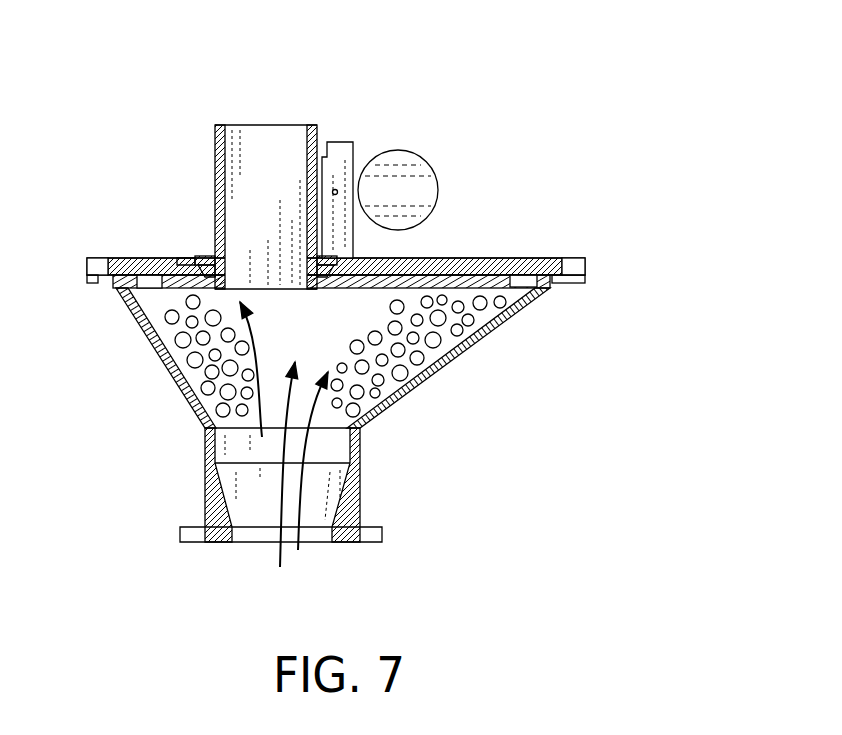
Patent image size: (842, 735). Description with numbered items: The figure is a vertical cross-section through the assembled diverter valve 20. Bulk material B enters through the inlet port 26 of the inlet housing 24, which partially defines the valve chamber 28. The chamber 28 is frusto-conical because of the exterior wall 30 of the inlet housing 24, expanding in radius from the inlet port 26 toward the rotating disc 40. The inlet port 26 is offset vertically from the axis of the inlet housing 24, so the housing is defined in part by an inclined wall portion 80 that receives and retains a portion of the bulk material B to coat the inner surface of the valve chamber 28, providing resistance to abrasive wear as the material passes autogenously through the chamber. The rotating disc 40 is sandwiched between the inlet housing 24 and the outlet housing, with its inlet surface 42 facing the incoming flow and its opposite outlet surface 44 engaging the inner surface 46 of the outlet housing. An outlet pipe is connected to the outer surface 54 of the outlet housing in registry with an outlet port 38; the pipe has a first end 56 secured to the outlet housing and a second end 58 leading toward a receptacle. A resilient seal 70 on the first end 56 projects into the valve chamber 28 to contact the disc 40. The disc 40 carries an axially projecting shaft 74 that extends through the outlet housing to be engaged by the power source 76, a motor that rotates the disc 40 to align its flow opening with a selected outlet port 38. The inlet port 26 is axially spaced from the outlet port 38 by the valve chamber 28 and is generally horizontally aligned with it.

The diverter valve 20 is at (590, 252).
The inlet housing 24 is at (472, 347).
The inlet port 26 is at (350, 543).
The valve chamber 28 is at (233, 337).
The exterior wall 30 is at (183, 393).
The outlet ports 38 is at (197, 268).
The rotating disc 40 is at (510, 275).
The inlet surface 42 is at (430, 363).
The outlet surface 44 is at (473, 275).
The inner surface 46 is at (143, 268).
The outer surface 54 is at (548, 258).
The first end 56 is at (226, 268).
The second end 58 is at (230, 125).
The resilient seal 70 is at (190, 306).
The shaft 74 is at (337, 167).
The power source 76 is at (384, 204).
The inclined wall portion 80 is at (215, 420).
The bulk material B is at (490, 472).